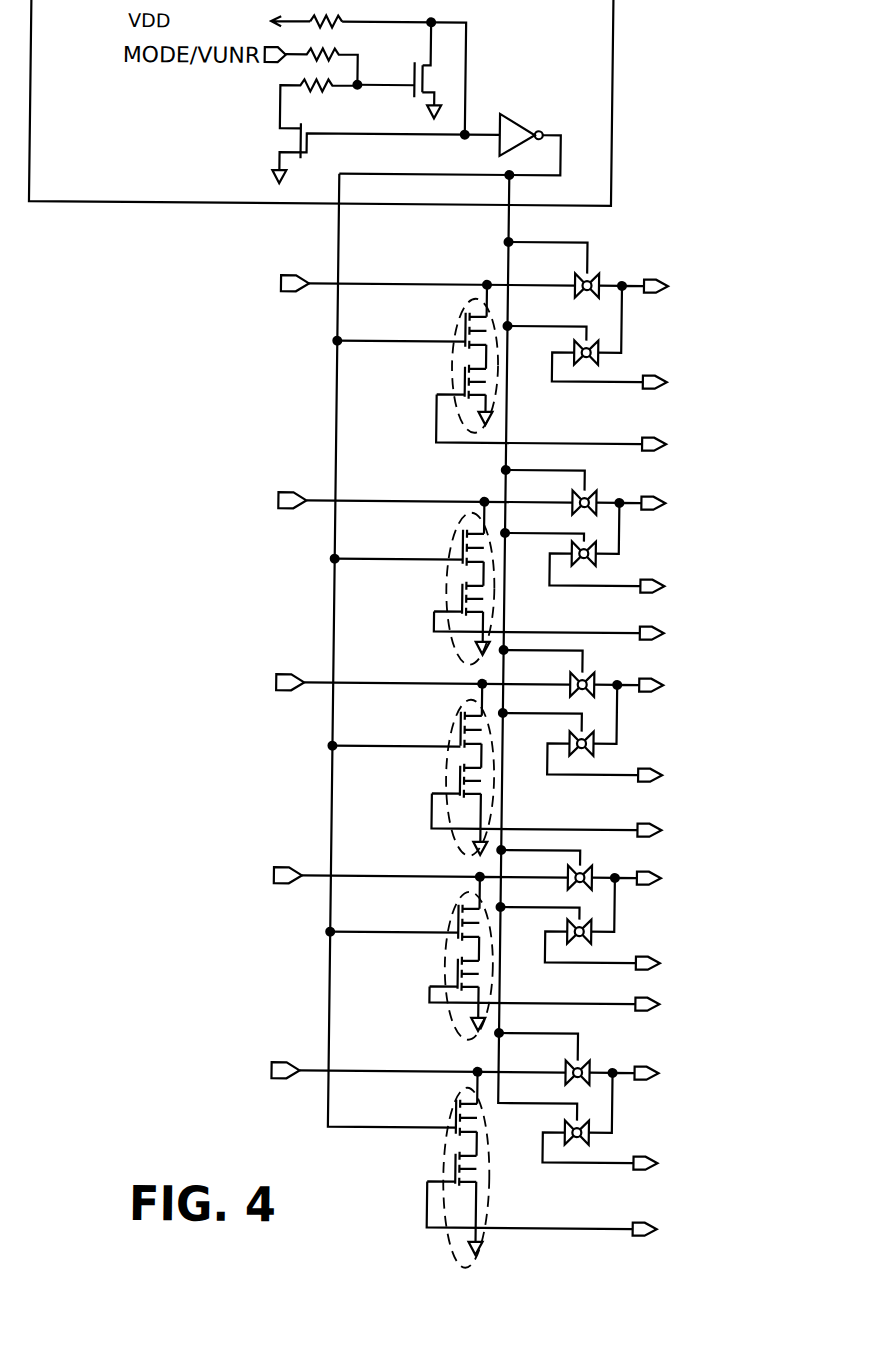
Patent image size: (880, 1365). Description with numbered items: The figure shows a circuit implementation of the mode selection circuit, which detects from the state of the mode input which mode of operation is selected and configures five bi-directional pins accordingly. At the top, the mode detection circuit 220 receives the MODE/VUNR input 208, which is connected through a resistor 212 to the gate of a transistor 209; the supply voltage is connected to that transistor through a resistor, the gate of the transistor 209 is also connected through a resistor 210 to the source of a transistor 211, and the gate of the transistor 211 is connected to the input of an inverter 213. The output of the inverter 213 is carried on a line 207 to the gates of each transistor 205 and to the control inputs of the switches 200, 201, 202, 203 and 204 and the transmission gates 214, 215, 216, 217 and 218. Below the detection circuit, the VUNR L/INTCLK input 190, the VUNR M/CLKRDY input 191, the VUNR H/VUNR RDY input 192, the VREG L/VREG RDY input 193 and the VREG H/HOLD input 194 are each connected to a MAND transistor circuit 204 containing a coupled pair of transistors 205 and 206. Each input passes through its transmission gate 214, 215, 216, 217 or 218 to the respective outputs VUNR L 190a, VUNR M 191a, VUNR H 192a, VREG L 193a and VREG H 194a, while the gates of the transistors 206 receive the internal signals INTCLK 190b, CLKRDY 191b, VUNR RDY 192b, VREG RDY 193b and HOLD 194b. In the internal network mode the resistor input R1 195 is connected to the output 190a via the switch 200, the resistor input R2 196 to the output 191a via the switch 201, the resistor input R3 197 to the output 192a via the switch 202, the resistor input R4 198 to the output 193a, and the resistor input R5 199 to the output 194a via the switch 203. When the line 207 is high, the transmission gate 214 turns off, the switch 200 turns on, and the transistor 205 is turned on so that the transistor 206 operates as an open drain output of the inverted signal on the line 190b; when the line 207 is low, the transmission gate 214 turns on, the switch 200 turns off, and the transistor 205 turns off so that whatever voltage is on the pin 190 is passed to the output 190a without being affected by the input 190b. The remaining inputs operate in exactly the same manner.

The VUNR L/INTCLK bi-directional input 190 is at (293, 294).
The VUNR M/CLKRDY bi-directional input 191 is at (293, 511).
The VUNR H/VUNR RDY bi-directional input 192 is at (293, 694).
The VREG L/VREG RDY bi-directional input 193 is at (290, 889).
The VREG H/HOLD bi-directional input 194 is at (290, 1082).
The VUNR L output 190a is at (666, 294).
The internal clock input line 190b is at (666, 448).
The VUNR M voltage medium output 191a is at (664, 506).
The internal clock ready signal output 191b is at (665, 636).
The VUNR H output 192a is at (664, 691).
The internal VUNR RDY signal output 192b is at (666, 834).
The VREG L output 193a is at (664, 884).
The internal regulated voltage signal output 193b is at (664, 1008).
The VREG H output 194a is at (661, 1080).
The internal hold signal output 194b is at (660, 1234).
The resistor input R1 195 is at (667, 385).
The resistor input R2 196 is at (666, 589).
The resistor input R3 197 is at (666, 779).
The resistor input R4 198 is at (666, 964).
The resistor input R5 199 is at (660, 1166).
The switch 200 is at (603, 358).
The switch 201 is at (597, 560).
The switch 202 is at (597, 746).
The switch 203 is at (595, 936).
The MAND transistor circuit 204 is at (453, 427).
The transistor 205 is at (458, 318).
The transistor 206 is at (453, 383).
The line 207 is at (559, 152).
The MODE/VUNR input 208 is at (270, 68).
The transistor 209 is at (436, 72).
The resistor 210 is at (333, 90).
The transistor 211 is at (270, 144).
The resistor 212 is at (341, 48).
The inverter 213 is at (522, 116).
The transmission gate 214 is at (600, 275).
The transmission gate 215 is at (598, 500).
The transmission gate 216 is at (600, 679).
The transmission gate 217 is at (588, 870).
The transmission gate 218 is at (598, 1060).
The mode detection circuit 220 is at (610, 139).